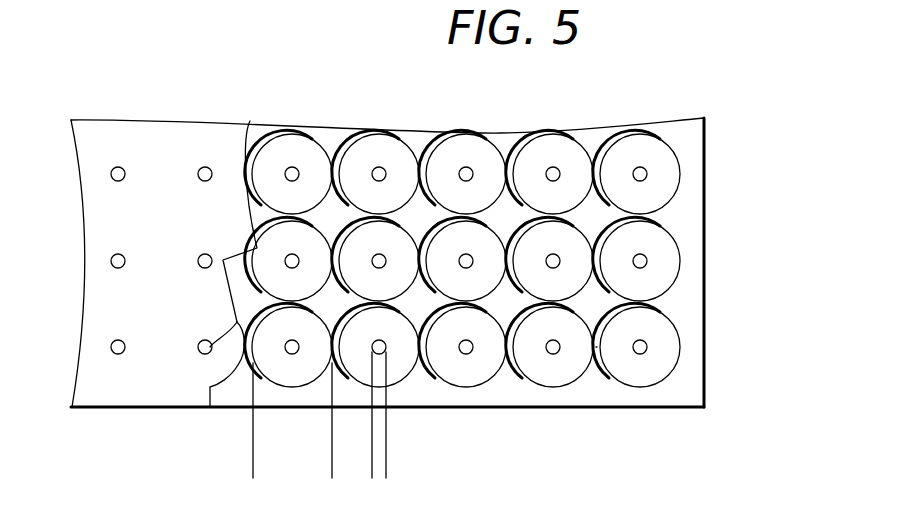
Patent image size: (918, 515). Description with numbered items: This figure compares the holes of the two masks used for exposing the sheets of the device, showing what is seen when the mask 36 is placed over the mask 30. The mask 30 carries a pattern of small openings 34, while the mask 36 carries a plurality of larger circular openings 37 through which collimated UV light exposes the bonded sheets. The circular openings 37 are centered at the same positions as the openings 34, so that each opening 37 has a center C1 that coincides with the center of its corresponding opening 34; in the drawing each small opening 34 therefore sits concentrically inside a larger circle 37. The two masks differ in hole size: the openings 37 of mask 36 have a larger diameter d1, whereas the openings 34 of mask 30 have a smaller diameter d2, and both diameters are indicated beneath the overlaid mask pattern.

The mask 30 is at (181, 123).
The mask 36 is at (693, 187).
The openings 34 is at (123, 349).
The circular openings 37 is at (645, 373).
The center of opening 37 C1 is at (648, 347).
The diameter of opening 37 d1 is at (253, 468).
The diameter of opening 34 d2 is at (350, 468).